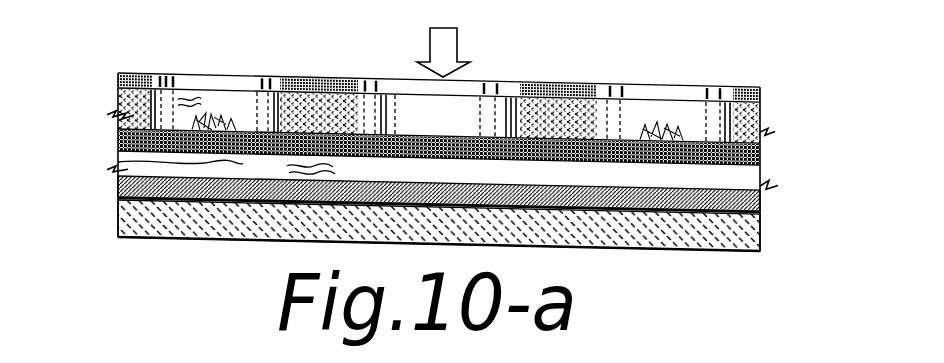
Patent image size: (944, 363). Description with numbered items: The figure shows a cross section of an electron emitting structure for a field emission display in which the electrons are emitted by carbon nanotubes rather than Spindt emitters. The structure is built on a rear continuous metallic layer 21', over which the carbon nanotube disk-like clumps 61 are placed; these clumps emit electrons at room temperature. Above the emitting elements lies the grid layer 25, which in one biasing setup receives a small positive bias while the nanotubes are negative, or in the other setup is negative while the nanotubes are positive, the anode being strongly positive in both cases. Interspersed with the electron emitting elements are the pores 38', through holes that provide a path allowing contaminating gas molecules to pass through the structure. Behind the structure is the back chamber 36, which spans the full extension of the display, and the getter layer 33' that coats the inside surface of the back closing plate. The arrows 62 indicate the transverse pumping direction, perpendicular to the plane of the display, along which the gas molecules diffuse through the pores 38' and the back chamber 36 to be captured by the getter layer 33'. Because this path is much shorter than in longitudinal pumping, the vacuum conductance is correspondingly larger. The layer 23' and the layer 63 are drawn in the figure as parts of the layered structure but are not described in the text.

The rear continuous metallic layer 21' is at (490, 151).
The electrode layer 23' is at (196, 76).
The grid layer 25 is at (745, 88).
The getter layer 33' is at (399, 187).
The back chamber 36 is at (118, 162).
The pores 38' is at (396, 79).
The carbon nanotube disk-like clumps 61 is at (663, 127).
The arrows 62 is at (450, 50).
The support substrate 63 is at (760, 227).